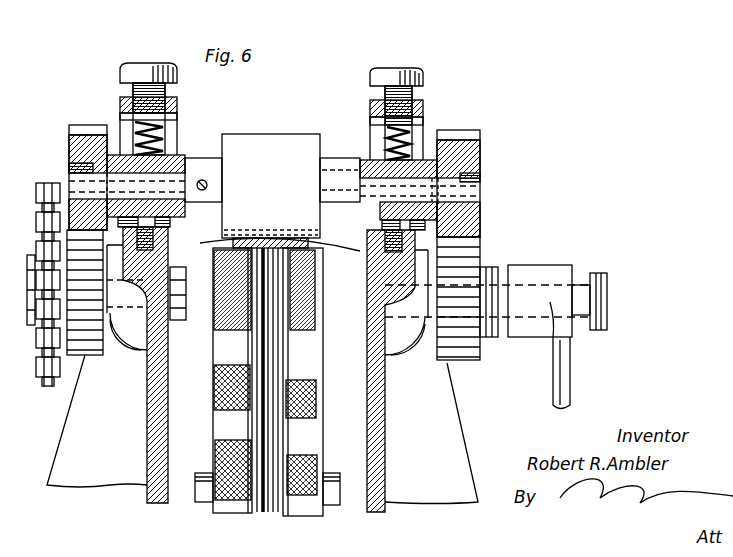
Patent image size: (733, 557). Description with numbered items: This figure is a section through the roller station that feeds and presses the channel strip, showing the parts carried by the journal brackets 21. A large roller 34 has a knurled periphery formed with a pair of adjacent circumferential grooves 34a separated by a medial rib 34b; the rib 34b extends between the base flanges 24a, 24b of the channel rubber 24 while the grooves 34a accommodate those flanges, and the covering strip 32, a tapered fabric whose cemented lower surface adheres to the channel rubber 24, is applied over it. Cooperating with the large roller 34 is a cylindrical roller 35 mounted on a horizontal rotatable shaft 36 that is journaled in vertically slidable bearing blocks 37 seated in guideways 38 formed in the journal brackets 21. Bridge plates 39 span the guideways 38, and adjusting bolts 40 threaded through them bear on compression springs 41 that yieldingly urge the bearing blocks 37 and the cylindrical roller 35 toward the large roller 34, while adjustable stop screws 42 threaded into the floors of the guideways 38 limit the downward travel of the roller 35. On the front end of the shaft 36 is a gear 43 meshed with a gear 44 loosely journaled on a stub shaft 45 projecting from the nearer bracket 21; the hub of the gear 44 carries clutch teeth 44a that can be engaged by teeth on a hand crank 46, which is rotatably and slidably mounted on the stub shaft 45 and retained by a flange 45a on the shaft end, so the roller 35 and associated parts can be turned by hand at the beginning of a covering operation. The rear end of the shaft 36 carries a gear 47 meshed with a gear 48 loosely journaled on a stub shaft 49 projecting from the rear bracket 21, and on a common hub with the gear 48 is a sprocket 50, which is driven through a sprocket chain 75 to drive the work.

The journal brackets 21 is at (262, 429).
The channel rubber 24 is at (300, 255).
The base flange 24a is at (235, 268).
The base flange 24b is at (278, 258).
The covering strip 32 is at (360, 249).
The large roller 34 is at (227, 362).
The circumferential grooves 34a is at (225, 340).
The medial rib 34b is at (275, 318).
The cylindrical roller 35 is at (291, 145).
The rotatable shaft 36 is at (338, 178).
The bearing blocks 37 is at (183, 157).
The guideways 38 is at (177, 123).
The bridge plates 39 is at (120, 100).
The adjusting bolts 40 is at (157, 78).
The compression springs 41 is at (121, 117).
The stop screws 42 is at (173, 237).
The gear 43 is at (482, 145).
The gear 44 is at (458, 270).
The clutch teeth 44a is at (492, 336).
The stub shaft 45 is at (580, 292).
The flange 45a is at (608, 325).
The hand crank 46 is at (565, 365).
The gear 47 is at (70, 140).
The gear 48 is at (88, 355).
The stub shaft 49 is at (200, 290).
The sprocket 50 is at (40, 249).
The sprocket chain 75 is at (33, 367).